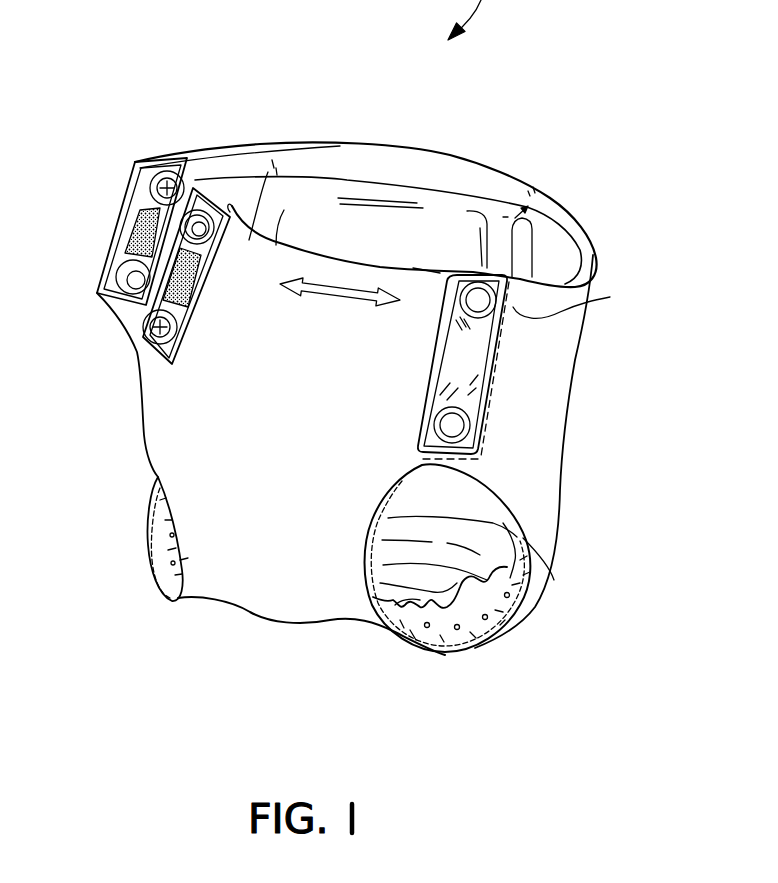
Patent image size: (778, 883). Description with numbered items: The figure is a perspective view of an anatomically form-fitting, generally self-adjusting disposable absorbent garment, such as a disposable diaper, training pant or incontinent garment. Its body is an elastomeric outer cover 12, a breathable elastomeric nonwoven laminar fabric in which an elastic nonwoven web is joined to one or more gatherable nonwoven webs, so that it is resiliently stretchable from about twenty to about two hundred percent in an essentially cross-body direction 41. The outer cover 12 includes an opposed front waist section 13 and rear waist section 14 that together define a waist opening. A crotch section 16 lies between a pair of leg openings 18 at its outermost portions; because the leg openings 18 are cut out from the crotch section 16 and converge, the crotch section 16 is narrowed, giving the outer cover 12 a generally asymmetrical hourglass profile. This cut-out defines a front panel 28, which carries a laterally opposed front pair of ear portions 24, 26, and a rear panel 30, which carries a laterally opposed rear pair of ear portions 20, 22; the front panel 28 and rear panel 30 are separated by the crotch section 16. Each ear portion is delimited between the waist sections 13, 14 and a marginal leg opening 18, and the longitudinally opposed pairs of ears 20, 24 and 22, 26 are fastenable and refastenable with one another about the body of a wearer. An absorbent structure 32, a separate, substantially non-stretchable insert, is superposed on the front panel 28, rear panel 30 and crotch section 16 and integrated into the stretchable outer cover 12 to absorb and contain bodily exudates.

The elastomeric outer cover 12 is at (560, 238).
The front waist section 13 is at (325, 249).
The rear waist section 14 is at (453, 153).
The crotch section 16 is at (276, 653).
The leg openings 18 is at (143, 601).
The ear portion 20 is at (122, 316).
The ear portion 22 is at (529, 367).
The ear portion 24 is at (233, 207).
The ear portion 26 is at (471, 268).
The front panel 28 is at (240, 410).
The rear panel 30 is at (591, 361).
The absorbent structure 32 is at (482, 536).
The cross-body direction 41 is at (353, 307).